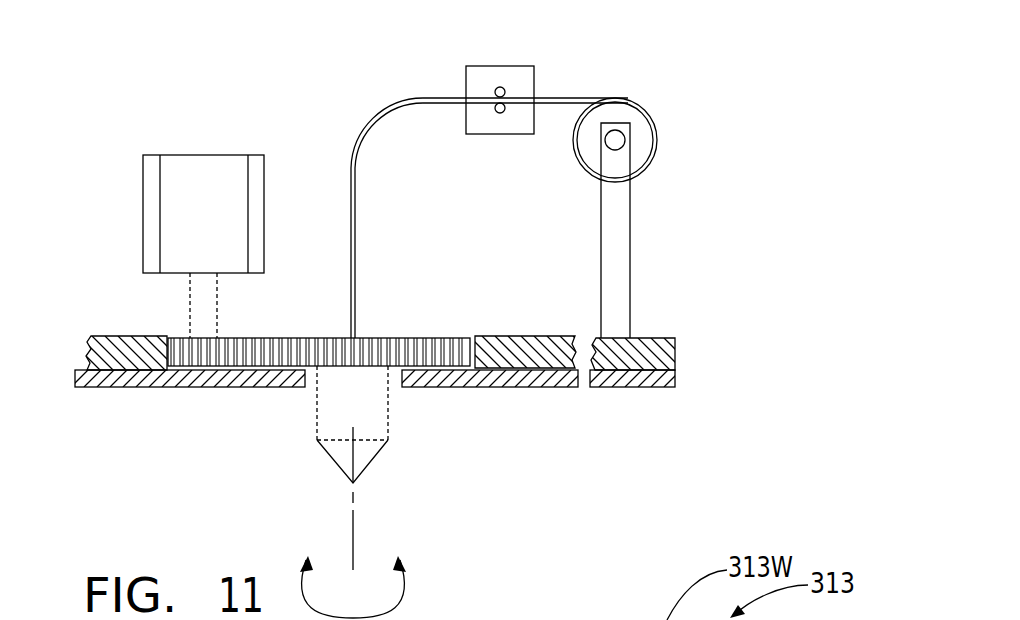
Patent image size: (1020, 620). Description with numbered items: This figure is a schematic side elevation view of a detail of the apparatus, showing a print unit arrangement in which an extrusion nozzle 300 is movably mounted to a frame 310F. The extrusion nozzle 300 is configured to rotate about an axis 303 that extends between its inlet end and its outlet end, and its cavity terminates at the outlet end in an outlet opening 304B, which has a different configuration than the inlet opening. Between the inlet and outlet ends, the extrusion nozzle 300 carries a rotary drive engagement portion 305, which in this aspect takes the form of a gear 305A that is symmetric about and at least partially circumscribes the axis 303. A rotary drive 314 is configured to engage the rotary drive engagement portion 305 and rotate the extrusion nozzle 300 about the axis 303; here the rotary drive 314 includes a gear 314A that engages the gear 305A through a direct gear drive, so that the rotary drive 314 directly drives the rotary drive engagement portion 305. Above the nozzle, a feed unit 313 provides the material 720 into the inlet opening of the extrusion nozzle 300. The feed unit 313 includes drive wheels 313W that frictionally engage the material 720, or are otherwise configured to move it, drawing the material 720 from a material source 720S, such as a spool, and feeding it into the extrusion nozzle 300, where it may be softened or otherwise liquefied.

The extrusion nozzle 300 is at (400, 436).
The axis 303 is at (354, 552).
The outlet opening 304B is at (356, 486).
The rotary drive engagement portion 305 is at (372, 338).
The gear 305A is at (478, 353).
The frame 310F is at (622, 374).
The feed unit 313 is at (558, 57).
The drive wheels 313W is at (500, 86).
The rotary drive 314 is at (203, 154).
The gear 314A is at (178, 336).
The material 720 is at (423, 103).
The material source 720S is at (633, 102).